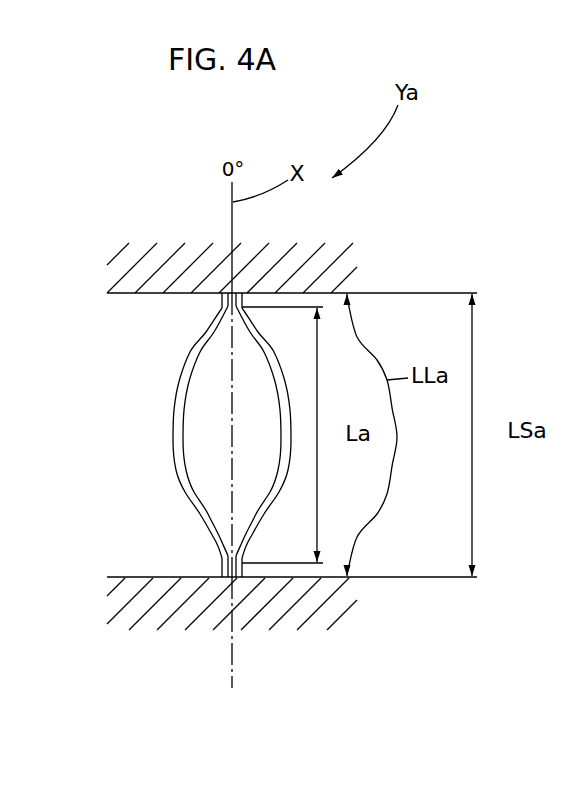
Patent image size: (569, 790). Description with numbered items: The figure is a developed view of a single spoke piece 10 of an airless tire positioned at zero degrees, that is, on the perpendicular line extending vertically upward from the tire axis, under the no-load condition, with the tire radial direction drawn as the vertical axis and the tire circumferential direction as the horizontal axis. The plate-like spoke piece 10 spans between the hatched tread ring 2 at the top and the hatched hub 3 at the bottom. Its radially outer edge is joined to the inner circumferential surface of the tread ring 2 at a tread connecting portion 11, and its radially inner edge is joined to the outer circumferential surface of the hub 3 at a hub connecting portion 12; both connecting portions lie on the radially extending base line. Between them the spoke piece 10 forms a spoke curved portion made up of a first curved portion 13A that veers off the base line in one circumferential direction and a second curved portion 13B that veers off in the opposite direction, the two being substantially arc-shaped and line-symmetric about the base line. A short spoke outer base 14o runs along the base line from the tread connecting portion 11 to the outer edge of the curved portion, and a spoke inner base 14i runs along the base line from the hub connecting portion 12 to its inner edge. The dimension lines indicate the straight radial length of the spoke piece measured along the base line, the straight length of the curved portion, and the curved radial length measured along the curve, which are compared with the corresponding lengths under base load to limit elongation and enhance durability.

The tread ring 2 is at (290, 298).
The hub 3 is at (140, 577).
The spoke piece 10 is at (192, 441).
The tread connecting portion 11 is at (235, 288).
The hub connecting portion 12 is at (236, 580).
The first curved portion 13A is at (182, 390).
The second curved portion 13B is at (265, 381).
The spoke outer base 14o is at (247, 338).
The spoke inner base 14i is at (222, 578).